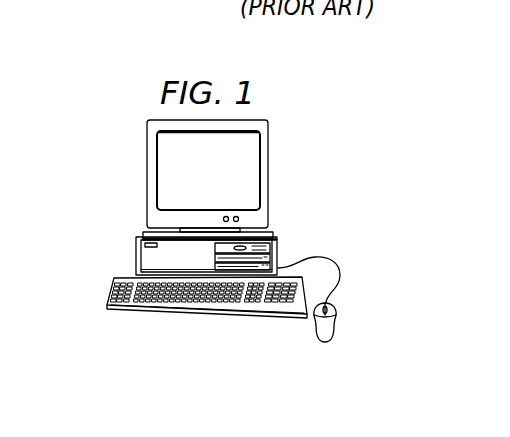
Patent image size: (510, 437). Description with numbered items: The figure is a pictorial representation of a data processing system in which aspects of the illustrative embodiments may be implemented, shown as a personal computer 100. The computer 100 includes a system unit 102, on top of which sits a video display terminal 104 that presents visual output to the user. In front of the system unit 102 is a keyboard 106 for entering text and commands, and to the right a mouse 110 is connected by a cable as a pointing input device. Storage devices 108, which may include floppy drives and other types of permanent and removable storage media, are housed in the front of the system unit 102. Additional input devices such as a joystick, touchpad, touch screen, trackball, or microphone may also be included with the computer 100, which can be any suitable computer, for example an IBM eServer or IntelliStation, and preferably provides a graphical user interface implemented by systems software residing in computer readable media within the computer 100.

The computer 100 is at (95, 164).
The system unit 102 is at (135, 250).
The video display terminal 104 is at (268, 176).
The keyboard 106 is at (130, 313).
The storage devices 108 is at (277, 263).
The mouse 110 is at (325, 342).